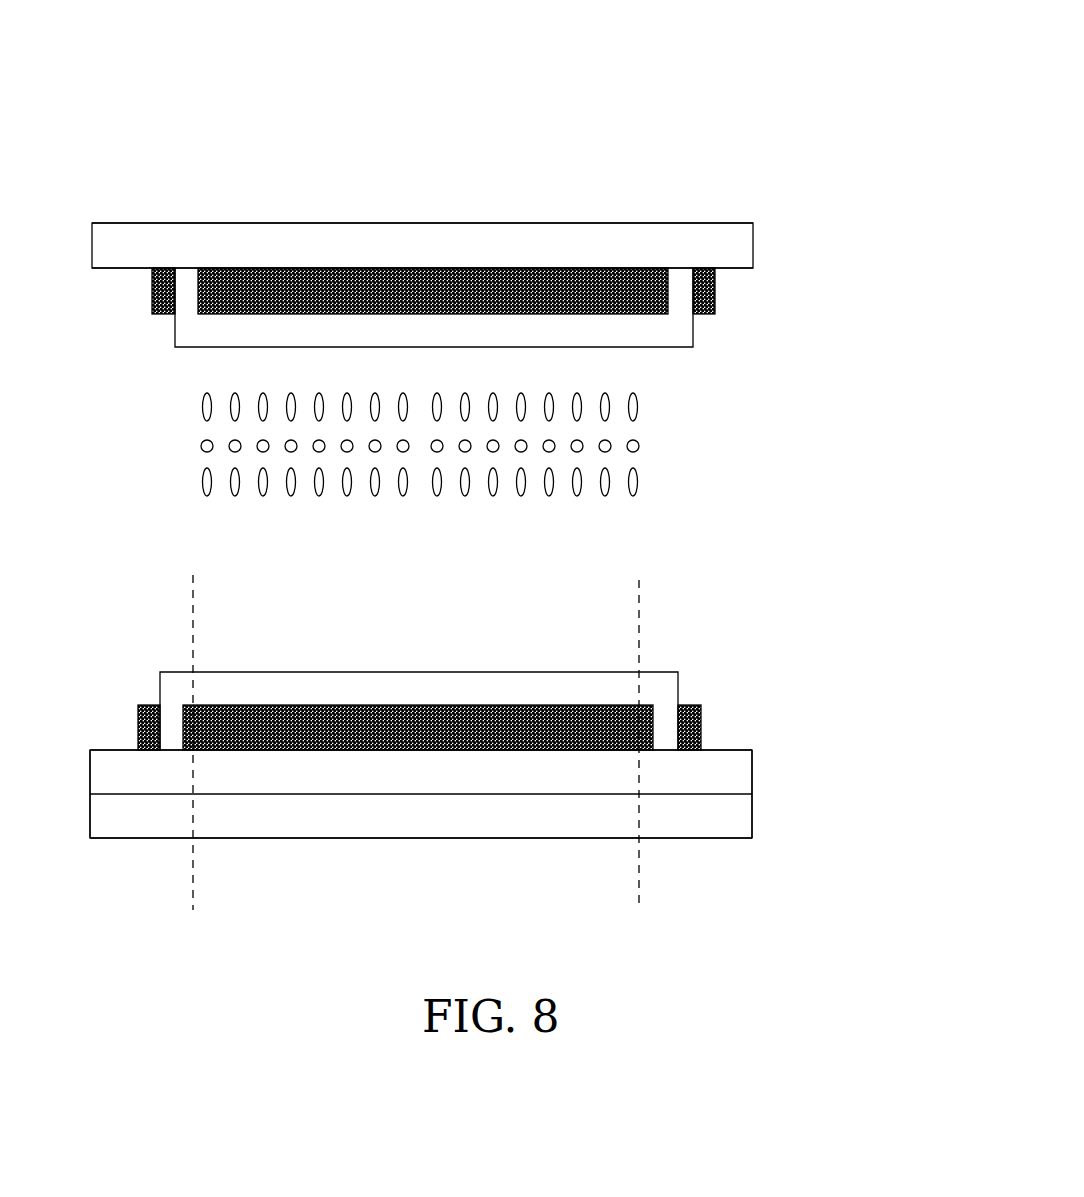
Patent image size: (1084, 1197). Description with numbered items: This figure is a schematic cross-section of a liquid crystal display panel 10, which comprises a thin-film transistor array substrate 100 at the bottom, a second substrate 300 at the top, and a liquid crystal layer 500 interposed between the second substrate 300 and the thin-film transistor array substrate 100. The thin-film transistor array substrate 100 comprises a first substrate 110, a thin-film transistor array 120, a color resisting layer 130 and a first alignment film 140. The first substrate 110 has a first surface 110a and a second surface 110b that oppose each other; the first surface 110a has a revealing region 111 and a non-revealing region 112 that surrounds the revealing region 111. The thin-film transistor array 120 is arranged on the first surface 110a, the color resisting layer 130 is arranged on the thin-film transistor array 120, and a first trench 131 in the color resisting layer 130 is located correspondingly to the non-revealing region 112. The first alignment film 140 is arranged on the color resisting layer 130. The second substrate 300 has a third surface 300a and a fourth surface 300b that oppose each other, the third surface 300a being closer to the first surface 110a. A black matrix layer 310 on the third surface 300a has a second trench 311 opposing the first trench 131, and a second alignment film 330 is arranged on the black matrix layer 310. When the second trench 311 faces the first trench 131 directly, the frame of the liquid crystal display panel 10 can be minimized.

The liquid crystal display panel 10 is at (422, 71).
The thin-film transistor array substrate 100 is at (507, 716).
The first substrate 110 is at (737, 827).
The first surface 110a is at (737, 792).
The second surface 110b is at (737, 842).
The revealing region 111 is at (425, 568).
The non-revealing region 112 is at (165, 595).
The thin-film transistor array 120 is at (742, 760).
The color resisting layer 130 is at (443, 713).
The first trench 131 is at (170, 728).
The first alignment film 140 is at (307, 692).
The second substrate 300 is at (743, 248).
The third surface 300a is at (733, 270).
The fourth surface 300b is at (733, 220).
The black matrix layer 310 is at (607, 297).
The second trench 311 is at (681, 298).
The second alignment film 330 is at (253, 333).
The liquid crystal layer 500 is at (632, 482).